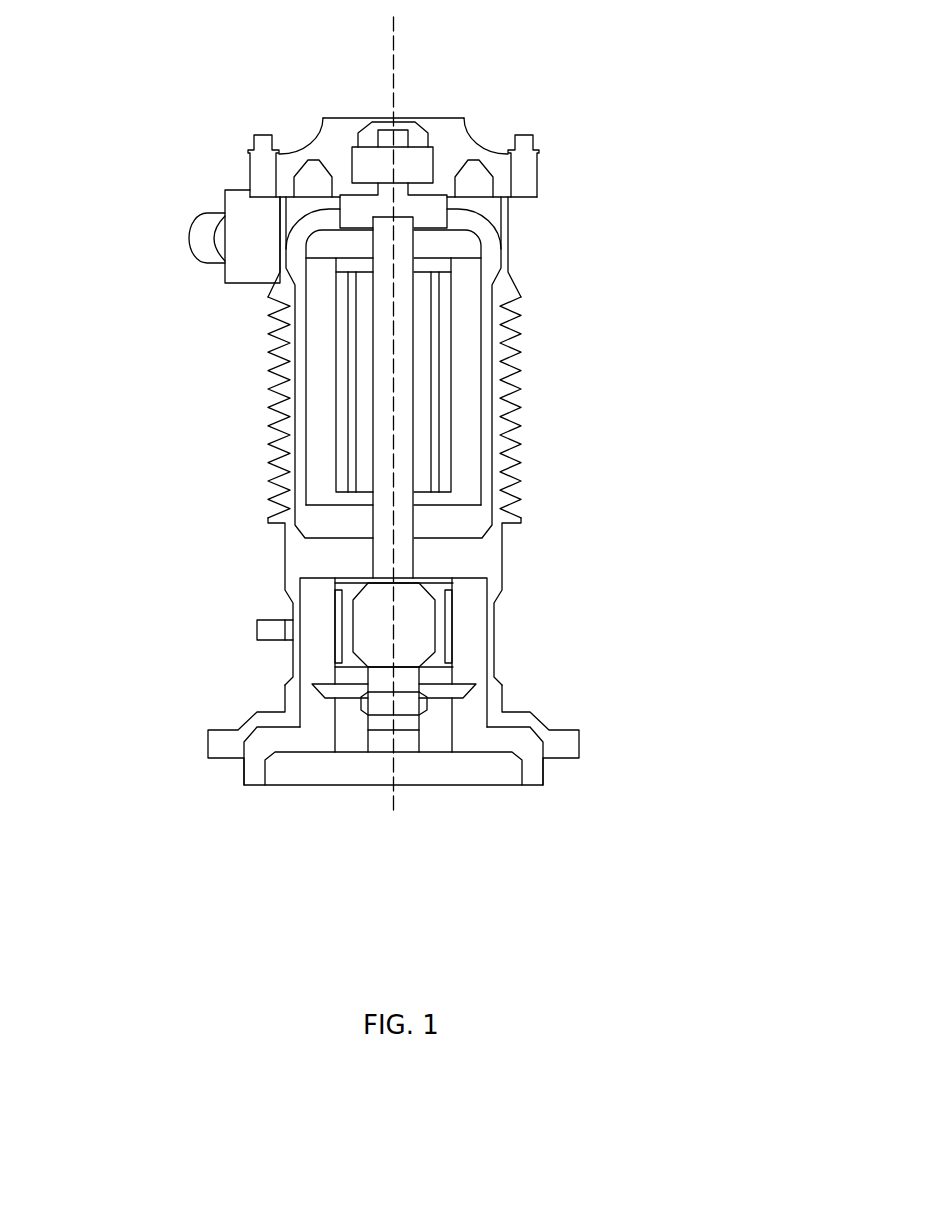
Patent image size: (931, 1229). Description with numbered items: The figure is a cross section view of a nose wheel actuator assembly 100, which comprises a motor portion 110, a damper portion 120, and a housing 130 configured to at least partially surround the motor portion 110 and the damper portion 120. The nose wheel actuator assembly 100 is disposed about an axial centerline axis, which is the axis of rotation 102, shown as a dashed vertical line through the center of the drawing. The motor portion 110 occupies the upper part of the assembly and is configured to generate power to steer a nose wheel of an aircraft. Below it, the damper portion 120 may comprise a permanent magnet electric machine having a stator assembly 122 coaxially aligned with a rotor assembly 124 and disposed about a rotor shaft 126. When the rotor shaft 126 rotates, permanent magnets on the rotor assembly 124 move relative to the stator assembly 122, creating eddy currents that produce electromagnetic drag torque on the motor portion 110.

The nose wheel actuator assembly 100 is at (168, 79).
The axis of rotation 102 is at (394, 58).
The motor portion 110 is at (555, 201).
The damper portion 120 is at (555, 588).
The stator assembly 122 is at (342, 620).
The rotor assembly 124 is at (377, 634).
The rotor shaft 126 is at (385, 398).
The housing 130 is at (285, 353).